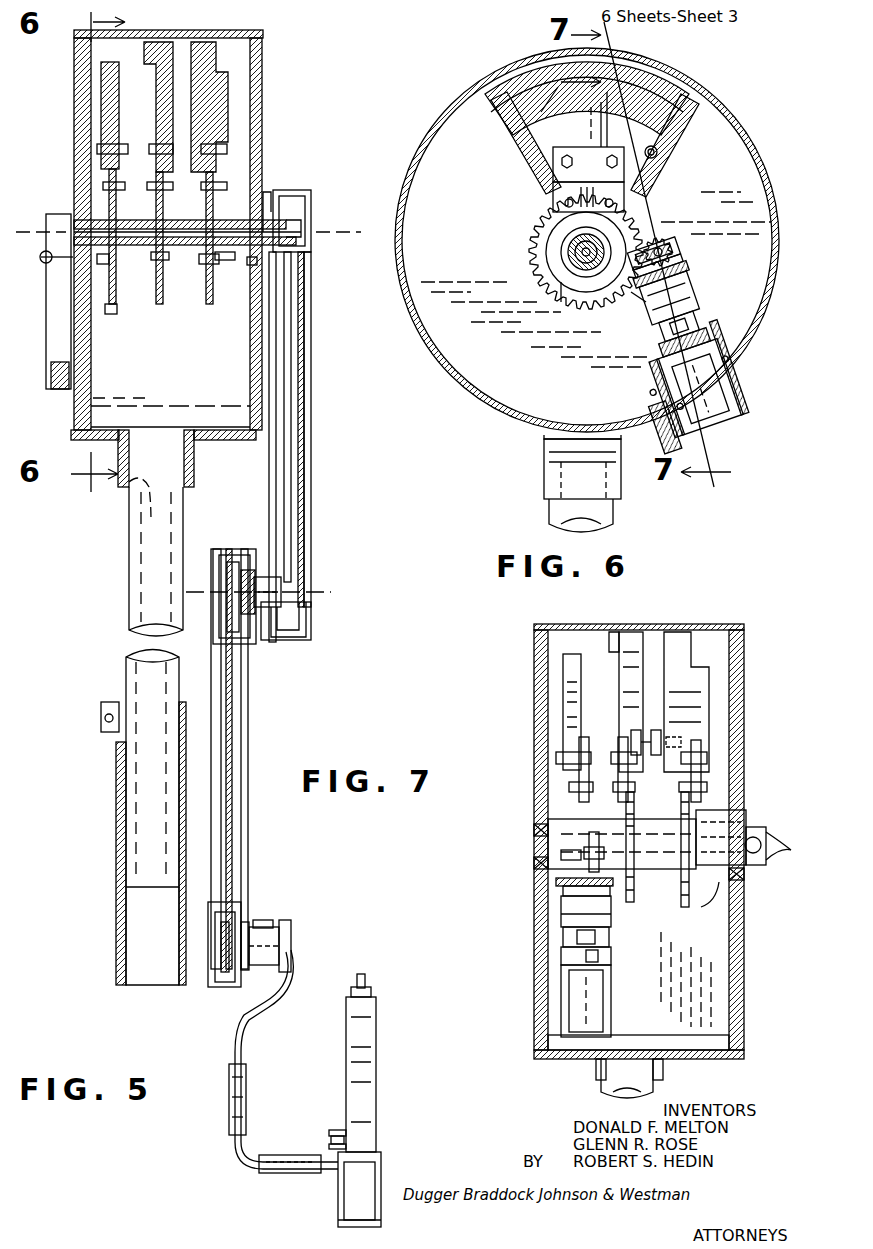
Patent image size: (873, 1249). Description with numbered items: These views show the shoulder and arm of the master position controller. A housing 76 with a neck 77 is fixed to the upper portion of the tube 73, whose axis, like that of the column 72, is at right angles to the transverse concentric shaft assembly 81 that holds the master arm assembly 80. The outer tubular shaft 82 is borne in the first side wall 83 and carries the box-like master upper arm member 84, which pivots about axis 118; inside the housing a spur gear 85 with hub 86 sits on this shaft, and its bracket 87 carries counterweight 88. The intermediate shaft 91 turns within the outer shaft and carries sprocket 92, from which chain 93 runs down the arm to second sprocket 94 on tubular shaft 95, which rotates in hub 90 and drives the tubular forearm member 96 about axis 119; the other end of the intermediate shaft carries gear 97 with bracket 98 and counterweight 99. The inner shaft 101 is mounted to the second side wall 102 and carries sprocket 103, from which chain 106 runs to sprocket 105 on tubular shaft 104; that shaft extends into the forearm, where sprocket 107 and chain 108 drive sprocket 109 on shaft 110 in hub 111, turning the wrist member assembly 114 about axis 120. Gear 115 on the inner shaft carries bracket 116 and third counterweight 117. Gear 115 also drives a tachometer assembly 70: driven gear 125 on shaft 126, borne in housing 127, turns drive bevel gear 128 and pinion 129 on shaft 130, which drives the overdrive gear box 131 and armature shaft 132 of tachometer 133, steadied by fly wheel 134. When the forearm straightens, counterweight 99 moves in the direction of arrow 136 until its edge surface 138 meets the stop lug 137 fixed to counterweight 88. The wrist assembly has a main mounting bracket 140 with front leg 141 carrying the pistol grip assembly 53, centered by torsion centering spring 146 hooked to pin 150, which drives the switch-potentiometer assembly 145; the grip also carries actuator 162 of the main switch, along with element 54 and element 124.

In FIG. 5, the pistol grip assembly 53 is at (432, 1085).
In FIG. 5, the battery cylinder 54 is at (378, 1015).
In FIG. 6, the tachometer assembly 70 is at (618, 340).
In FIG. 7, the tachometer assembly 70 is at (622, 970).
In FIG. 5, the column 72 is at (115, 838).
In FIG. 5, the tube 73 is at (125, 580).
In FIG. 6, the tube 73 is at (612, 512).
In FIG. 7, the tube 73 is at (660, 1090).
In FIG. 5, the housing 76 is at (75, 118).
In FIG. 6, the housing 76 is at (470, 425).
In FIG. 7, the housing 76 is at (670, 622).
In FIG. 5, the neck 77 is at (192, 470).
In FIG. 6, the neck 77 is at (548, 482).
In FIG. 7, the neck 77 is at (598, 1068).
In FIG. 5, the master arm assembly 80 is at (340, 594).
In FIG. 5, the concentric shaft assembly 81 is at (186, 312).
In FIG. 5, the outer tubular shaft 82 is at (265, 190).
In FIG. 7, the outer tubular shaft 82 is at (735, 900).
In FIG. 5, the first side wall 83 is at (258, 108).
In FIG. 6, the first side wall 83 is at (470, 110).
In FIG. 7, the first side wall 83 is at (740, 752).
In FIG. 5, the master upper arm member 84 is at (312, 480).
In FIG. 5, the spur gear 85 is at (205, 280).
In FIG. 7, the spur gear 85 is at (720, 910).
In FIG. 5, the hub 86 is at (228, 262).
In FIG. 7, the hub 86 is at (700, 810).
In FIG. 5, the bracket 87 is at (220, 160).
In FIG. 7, the bracket 87 is at (700, 745).
In FIG. 5, the counterweight 88 is at (210, 95).
In FIG. 6, the counterweight 88 is at (680, 105).
In FIG. 7, the counterweight 88 is at (700, 690).
In FIG. 5, the hub 90 is at (258, 575).
In FIG. 5, the intermediate shaft 91 is at (120, 285).
In FIG. 7, the intermediate shaft 91 is at (565, 818).
In FIG. 5, the sprocket 92 is at (300, 190).
In FIG. 5, the chain 93 is at (290, 318).
In FIG. 5, the second sprocket 94 is at (275, 635).
In FIG. 5, the tubular shaft 95 is at (256, 645).
In FIG. 5, the tubular forearm member 96 is at (247, 735).
In FIG. 5, the gear 97 is at (160, 272).
In FIG. 7, the gear 97 is at (600, 865).
In FIG. 5, the bracket 98 is at (155, 160).
In FIG. 7, the bracket 98 is at (618, 760).
In FIG. 5, the counterweight 99 is at (155, 88).
In FIG. 6, the counterweight 99 is at (520, 85).
In FIG. 7, the counterweight 99 is at (618, 675).
In FIG. 5, the inner shaft 101 is at (80, 215).
In FIG. 6, the inner shaft 101 is at (570, 245).
In FIG. 7, the inner shaft 101 is at (745, 860).
In FIG. 5, the second side wall 102 is at (75, 148).
In FIG. 7, the second side wall 102 is at (535, 704).
In FIG. 5, the sprocket 103 is at (300, 210).
In FIG. 5, the tubular shaft 104 is at (308, 632).
In FIG. 5, the sprocket 105 is at (300, 612).
In FIG. 5, the chain 106 is at (302, 418).
In FIG. 5, the sprocket 107 is at (228, 550).
In FIG. 5, the chain 108 is at (232, 790).
In FIG. 5, the sprocket 109 is at (222, 985).
In FIG. 5, the shaft 110 is at (222, 950).
In FIG. 5, the hub 111 is at (258, 920).
In FIG. 5, the wrist member assembly 114 is at (290, 985).
In FIG. 5, the gear 115 is at (115, 300).
In FIG. 6, the gear 115 is at (560, 305).
In FIG. 7, the gear 115 is at (560, 828).
In FIG. 5, the bracket 116 is at (108, 172).
In FIG. 6, the bracket 116 is at (552, 195).
In FIG. 7, the bracket 116 is at (580, 742).
In FIG. 5, the third counterweight 117 is at (105, 77).
In FIG. 6, the third counterweight 117 is at (610, 125).
In FIG. 7, the third counterweight 117 is at (565, 670).
In FIG. 5, the axis 118 is at (352, 232).
In FIG. 5, the axis 119 is at (200, 590).
In FIG. 5, the axis 120 is at (298, 943).
In FIG. 6, the gear 124 is at (545, 270).
In FIG. 6, the driven gear 125 is at (657, 237).
In FIG. 6, the shaft 126 is at (635, 295).
In FIG. 7, the shaft 126 is at (610, 845).
In FIG. 6, the housing 127 is at (735, 270).
In FIG. 7, the housing 127 is at (560, 875).
In FIG. 6, the drive bevel gear 128 is at (705, 250).
In FIG. 7, the drive bevel gear 128 is at (628, 875).
In FIG. 6, the pinion 129 is at (712, 262).
In FIG. 7, the pinion 129 is at (562, 882).
In FIG. 7, the shaft 130 is at (598, 880).
In FIG. 6, the overdrive gear box 131 is at (710, 295).
In FIG. 7, the overdrive gear box 131 is at (560, 908).
In FIG. 6, the armature shaft 132 is at (715, 348).
In FIG. 7, the armature shaft 132 is at (608, 955).
In FIG. 6, the tachometer 133 is at (722, 400).
In FIG. 7, the tachometer 133 is at (570, 1003).
In FIG. 6, the fly wheel 134 is at (715, 322).
In FIG. 7, the fly wheel 134 is at (565, 938).
In FIG. 6, the arrow 136 is at (540, 55).
In FIG. 6, the stop lug 137 is at (655, 175).
In FIG. 7, the stop lug 137 is at (638, 750).
In FIG. 6, the edge surface 138 is at (665, 120).
In FIG. 7, the edge surface 138 is at (630, 640).
In FIG. 5, the main mounting bracket 140 is at (247, 1063).
In FIG. 5, the front leg 141 is at (290, 1150).
In FIG. 5, the switch-potentiometer assembly 145 is at (308, 1194).
In FIG. 5, the torsion centering spring 146 is at (352, 1138).
In FIG. 5, the pin 150 is at (335, 1125).
In FIG. 5, the actuator 162 is at (366, 985).